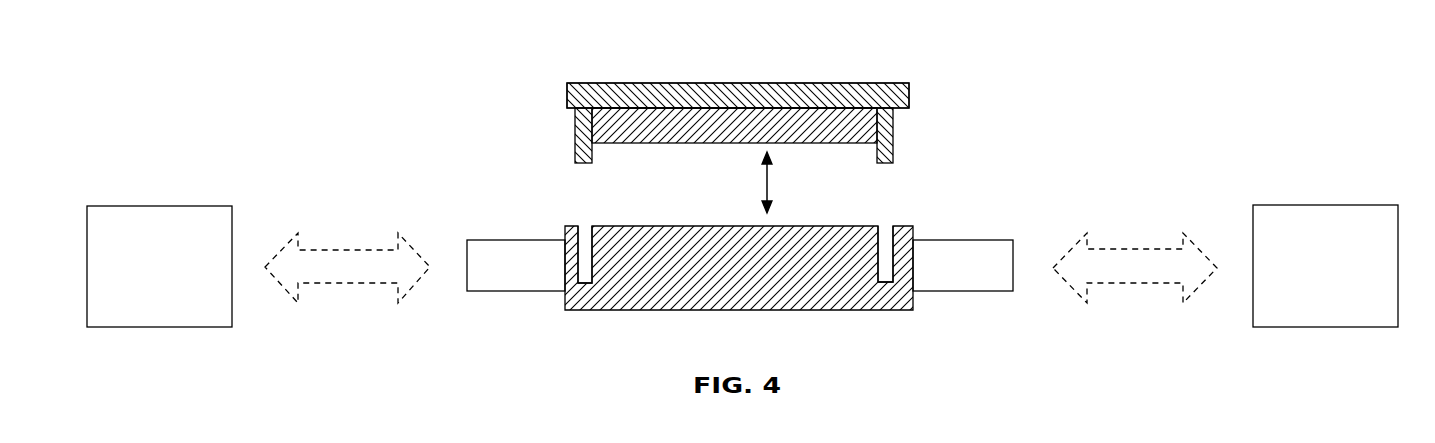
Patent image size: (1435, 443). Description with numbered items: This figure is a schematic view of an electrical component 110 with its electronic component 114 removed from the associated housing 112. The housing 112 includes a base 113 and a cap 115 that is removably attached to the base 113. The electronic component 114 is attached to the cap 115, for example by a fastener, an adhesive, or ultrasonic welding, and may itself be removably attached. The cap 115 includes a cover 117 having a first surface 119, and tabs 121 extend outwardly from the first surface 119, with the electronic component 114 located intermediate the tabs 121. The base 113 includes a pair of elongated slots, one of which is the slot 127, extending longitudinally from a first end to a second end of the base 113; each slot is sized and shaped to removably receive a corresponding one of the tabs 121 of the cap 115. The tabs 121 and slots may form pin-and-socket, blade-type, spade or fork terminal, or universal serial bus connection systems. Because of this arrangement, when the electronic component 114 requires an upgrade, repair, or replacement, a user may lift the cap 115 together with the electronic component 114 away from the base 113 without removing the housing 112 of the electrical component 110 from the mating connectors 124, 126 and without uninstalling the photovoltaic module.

The electrical component 110 is at (473, 73).
The housing 112 is at (900, 227).
The base 113 is at (795, 270).
The electronic component 114 is at (707, 110).
The cap 115 is at (751, 97).
The cover 117 is at (618, 97).
The first surface 119 is at (845, 108).
The tab 121 is at (580, 135).
The mating connector 124 is at (168, 242).
The mating connector 126 is at (1281, 230).
The elongated slot 127 is at (585, 272).